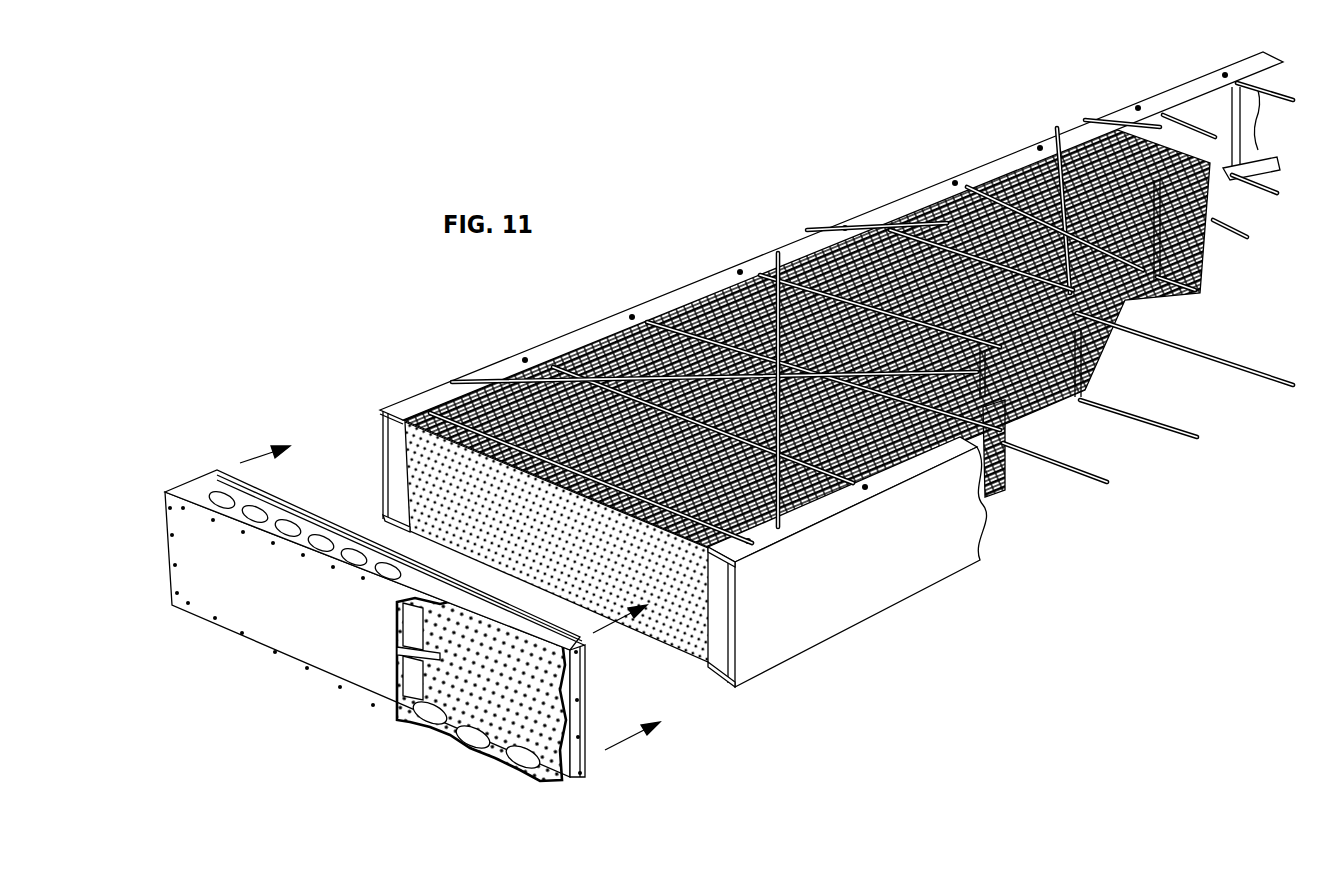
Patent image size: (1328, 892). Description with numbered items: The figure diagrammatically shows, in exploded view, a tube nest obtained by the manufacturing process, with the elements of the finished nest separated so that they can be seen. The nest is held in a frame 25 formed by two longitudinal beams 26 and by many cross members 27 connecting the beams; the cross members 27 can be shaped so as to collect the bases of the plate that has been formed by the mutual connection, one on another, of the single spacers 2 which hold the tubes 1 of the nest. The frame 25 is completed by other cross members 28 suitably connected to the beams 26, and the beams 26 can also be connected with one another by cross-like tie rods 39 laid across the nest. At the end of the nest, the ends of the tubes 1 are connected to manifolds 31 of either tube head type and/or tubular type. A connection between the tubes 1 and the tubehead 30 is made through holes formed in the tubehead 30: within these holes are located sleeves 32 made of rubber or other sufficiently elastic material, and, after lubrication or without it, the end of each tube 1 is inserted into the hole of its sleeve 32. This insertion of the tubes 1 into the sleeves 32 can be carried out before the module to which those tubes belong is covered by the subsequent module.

The tube 1 is at (1122, 255).
The spacer 2 is at (1163, 262).
The frame 25 is at (380, 463).
The longitudinal beam 26 is at (492, 365).
The cross member 27 is at (1255, 382).
The cross member 28 is at (430, 410).
The tubehead 30 is at (500, 752).
The manifold 31 is at (200, 488).
The sleeve 32 is at (425, 717).
The cross-like tie rod 39 is at (550, 378).